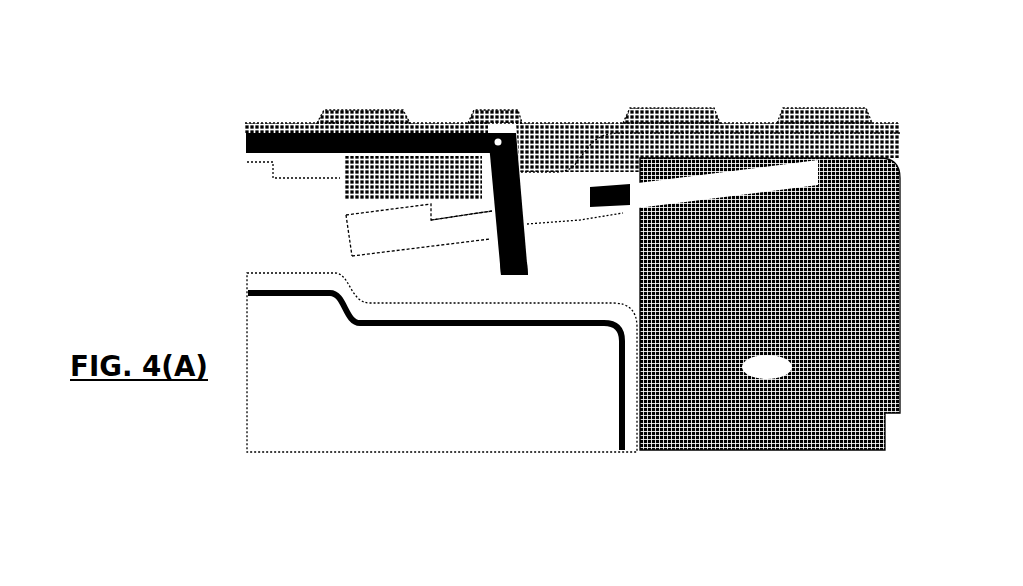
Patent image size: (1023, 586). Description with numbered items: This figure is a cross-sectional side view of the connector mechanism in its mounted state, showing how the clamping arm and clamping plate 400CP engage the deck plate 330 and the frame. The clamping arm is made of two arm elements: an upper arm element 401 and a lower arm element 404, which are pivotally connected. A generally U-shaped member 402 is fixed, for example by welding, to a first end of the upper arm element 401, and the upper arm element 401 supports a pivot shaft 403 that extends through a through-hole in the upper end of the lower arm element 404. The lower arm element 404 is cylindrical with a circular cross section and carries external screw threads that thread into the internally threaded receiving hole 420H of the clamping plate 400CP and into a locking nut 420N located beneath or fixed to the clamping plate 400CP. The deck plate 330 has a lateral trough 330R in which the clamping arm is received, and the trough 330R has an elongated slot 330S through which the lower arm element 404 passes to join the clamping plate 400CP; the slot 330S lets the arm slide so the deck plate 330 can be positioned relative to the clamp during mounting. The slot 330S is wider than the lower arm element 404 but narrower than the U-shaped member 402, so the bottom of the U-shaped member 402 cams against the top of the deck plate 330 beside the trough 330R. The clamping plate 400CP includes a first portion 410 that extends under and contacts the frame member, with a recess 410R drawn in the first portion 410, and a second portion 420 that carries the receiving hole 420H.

The deck plate 330 is at (362, 108).
The lateral trough 330R is at (514, 112).
The slot 330S is at (350, 175).
The upper arm element 401 is at (255, 132).
The U-shaped member 402 is at (471, 122).
The pivot shaft 403 is at (514, 134).
The lower arm element 404 is at (493, 210).
The clamping plate 400CP is at (328, 197).
The first portion 410 is at (615, 222).
The recess of block 410R is at (632, 186).
The second portion 420 is at (417, 232).
The receiving hole 420H is at (483, 240).
The locking nut 420N is at (500, 262).